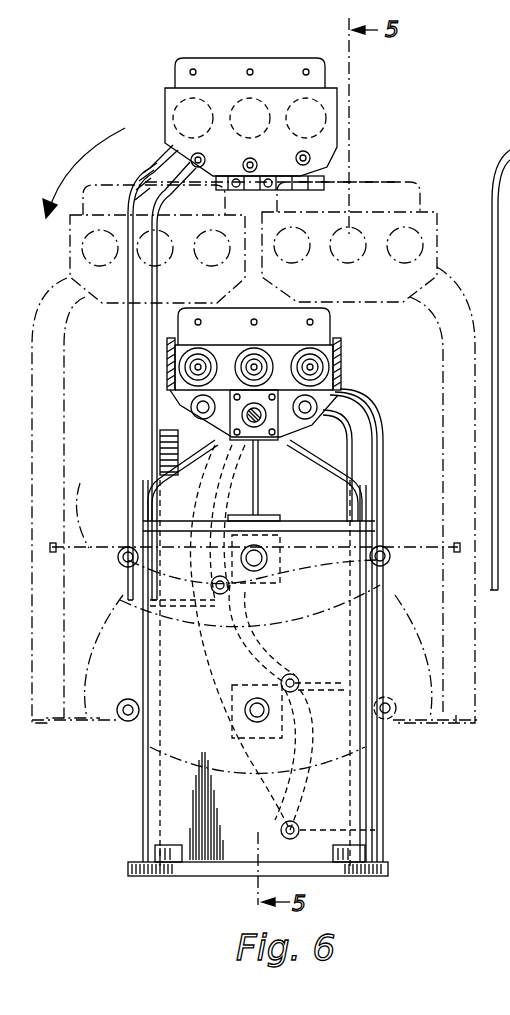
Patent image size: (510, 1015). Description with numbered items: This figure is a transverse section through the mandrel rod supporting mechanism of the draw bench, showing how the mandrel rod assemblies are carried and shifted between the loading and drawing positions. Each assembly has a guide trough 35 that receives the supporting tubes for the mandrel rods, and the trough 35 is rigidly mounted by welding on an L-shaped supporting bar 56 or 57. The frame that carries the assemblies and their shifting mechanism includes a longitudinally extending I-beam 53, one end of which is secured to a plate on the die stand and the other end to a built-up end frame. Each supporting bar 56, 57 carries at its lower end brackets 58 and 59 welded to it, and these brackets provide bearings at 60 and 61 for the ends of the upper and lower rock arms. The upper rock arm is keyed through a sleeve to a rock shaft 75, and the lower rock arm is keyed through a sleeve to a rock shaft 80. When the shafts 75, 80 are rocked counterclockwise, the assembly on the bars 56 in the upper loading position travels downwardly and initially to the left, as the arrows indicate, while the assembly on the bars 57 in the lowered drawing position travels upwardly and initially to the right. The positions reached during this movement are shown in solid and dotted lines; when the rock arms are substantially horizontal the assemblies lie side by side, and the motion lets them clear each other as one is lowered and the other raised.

The guide trough 35 is at (337, 142).
The I-beam 53 is at (258, 470).
The L-shaped supporting bar 56 is at (150, 379).
The L-shaped supporting bar 57 is at (370, 402).
The bracket 58 is at (170, 450).
The bracket 59 is at (116, 650).
The bearing 60 is at (126, 562).
The bearing 61 is at (255, 596).
The rock shaft 75 is at (270, 562).
The rock shaft 80 is at (270, 712).